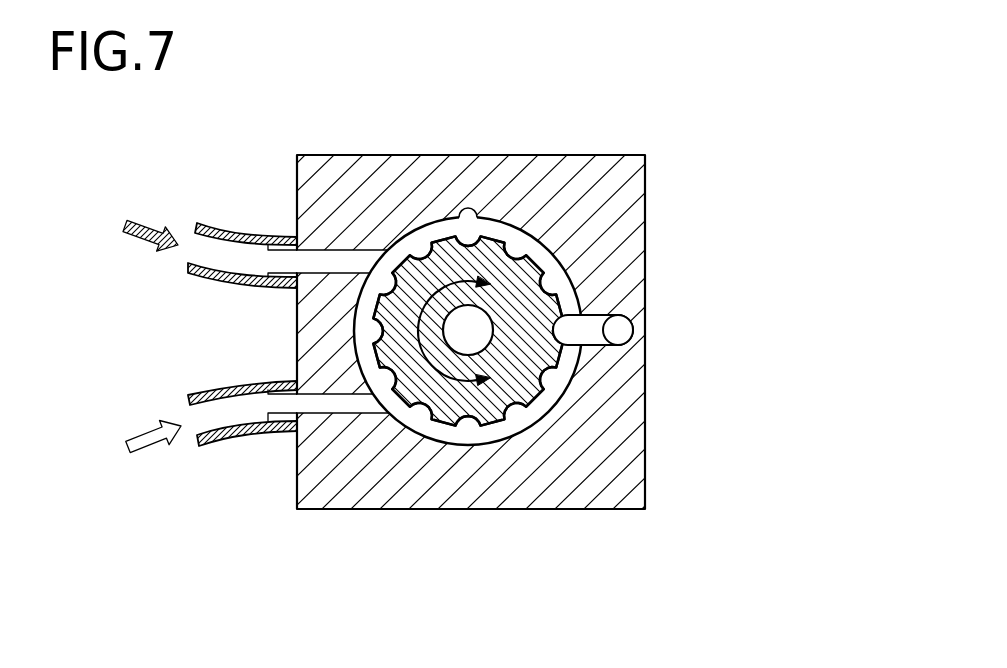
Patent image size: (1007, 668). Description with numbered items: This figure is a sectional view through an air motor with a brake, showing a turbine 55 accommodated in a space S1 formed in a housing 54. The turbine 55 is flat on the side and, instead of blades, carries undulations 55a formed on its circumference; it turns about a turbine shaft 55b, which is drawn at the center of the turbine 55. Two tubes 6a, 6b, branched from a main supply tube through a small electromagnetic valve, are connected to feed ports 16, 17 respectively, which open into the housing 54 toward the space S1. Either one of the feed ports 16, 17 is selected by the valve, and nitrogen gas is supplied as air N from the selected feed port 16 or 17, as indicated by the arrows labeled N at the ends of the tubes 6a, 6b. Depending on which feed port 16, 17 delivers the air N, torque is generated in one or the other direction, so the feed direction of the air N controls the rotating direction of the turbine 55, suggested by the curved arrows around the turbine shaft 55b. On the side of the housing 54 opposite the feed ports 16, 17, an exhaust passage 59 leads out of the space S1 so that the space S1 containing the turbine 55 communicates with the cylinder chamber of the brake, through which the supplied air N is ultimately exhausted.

The housing 54 is at (337, 155).
The space S1 is at (474, 216).
The turbine 55 is at (463, 420).
The undulations 55a is at (535, 403).
The turbine shaft 55b is at (472, 322).
The exhaust passage 59 is at (622, 330).
The tube 6a is at (224, 228).
The tube 6b is at (216, 445).
The feed port 16 is at (280, 254).
The feed port 17 is at (280, 414).
The air N is at (135, 334).